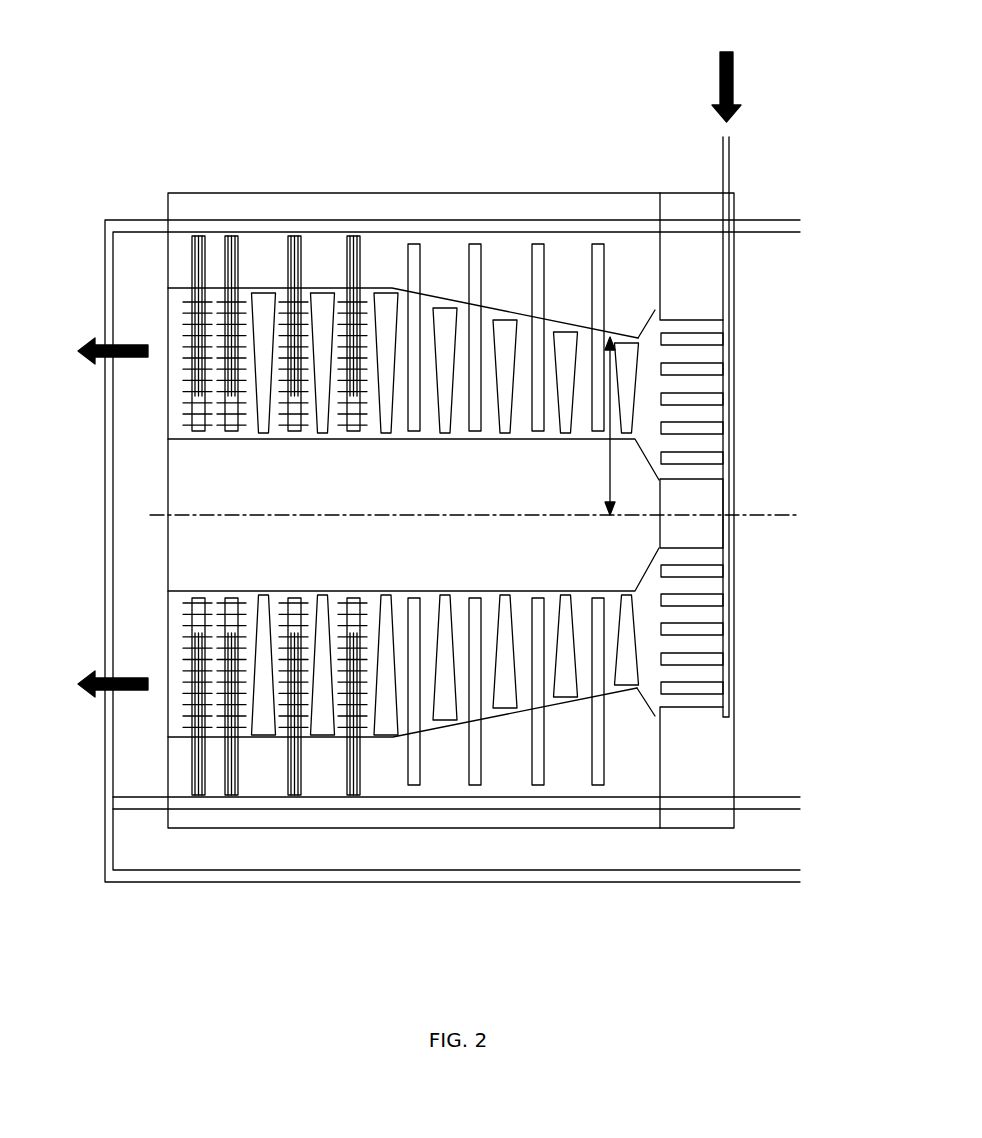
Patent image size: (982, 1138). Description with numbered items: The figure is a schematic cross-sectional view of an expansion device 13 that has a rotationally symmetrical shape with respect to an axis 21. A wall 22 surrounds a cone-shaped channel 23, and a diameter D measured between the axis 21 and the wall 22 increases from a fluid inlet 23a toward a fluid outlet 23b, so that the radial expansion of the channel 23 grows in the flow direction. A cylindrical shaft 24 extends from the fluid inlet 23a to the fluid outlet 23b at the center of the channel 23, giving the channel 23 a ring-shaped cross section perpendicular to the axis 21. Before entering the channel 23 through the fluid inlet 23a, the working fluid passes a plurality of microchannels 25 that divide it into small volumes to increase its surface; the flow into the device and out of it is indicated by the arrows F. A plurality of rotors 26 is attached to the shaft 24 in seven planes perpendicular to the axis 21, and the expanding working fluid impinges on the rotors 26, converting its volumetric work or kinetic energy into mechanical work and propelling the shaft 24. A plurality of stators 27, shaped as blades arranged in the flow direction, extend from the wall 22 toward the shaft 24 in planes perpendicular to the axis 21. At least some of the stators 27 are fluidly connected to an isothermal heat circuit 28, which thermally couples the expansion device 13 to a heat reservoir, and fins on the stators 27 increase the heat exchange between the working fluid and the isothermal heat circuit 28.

The expansion device 13 is at (140, 105).
The axis 21 is at (768, 516).
The wall 22 is at (627, 255).
The channel 23 is at (172, 633).
The fluid inlet 23a is at (655, 322).
The fluid outlet 23b is at (160, 318).
The shaft 24 is at (406, 470).
The microchannels 25 is at (717, 386).
The rotors 26 is at (266, 438).
The stators 27 is at (198, 236).
The isothermal heat circuit 28 is at (768, 224).
The diameter D is at (608, 470).
The fluid flow F is at (733, 70).